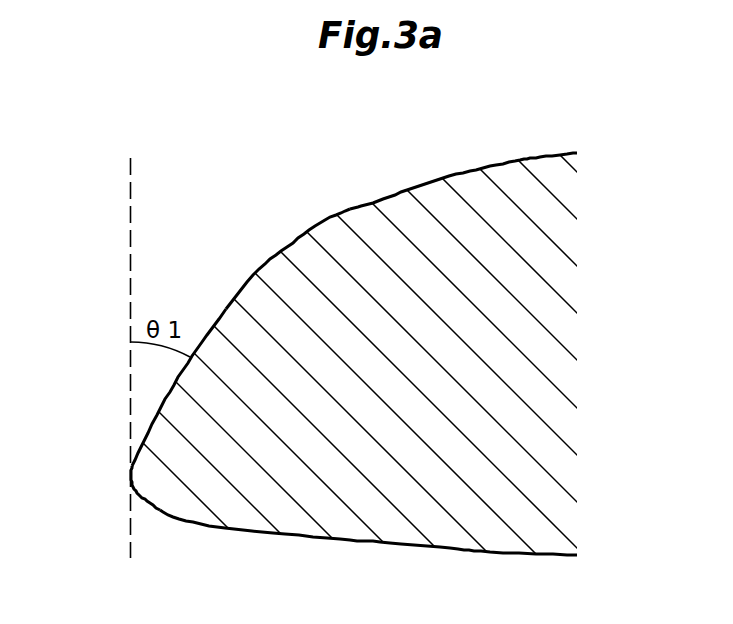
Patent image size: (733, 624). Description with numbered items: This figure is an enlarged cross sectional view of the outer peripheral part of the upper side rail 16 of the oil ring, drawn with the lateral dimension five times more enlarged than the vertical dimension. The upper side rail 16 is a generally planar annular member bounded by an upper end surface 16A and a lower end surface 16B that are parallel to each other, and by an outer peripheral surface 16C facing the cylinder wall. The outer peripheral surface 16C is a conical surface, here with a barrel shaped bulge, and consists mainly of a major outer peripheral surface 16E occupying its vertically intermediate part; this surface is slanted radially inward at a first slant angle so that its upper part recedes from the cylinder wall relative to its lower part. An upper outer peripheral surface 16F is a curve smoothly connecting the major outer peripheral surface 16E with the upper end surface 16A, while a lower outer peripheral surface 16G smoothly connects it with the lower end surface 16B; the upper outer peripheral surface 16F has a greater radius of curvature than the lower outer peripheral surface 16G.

The upper side rail 16 is at (592, 150).
The upper end surface 16A is at (538, 154).
The lower end surface 16B is at (511, 556).
The outer peripheral surface 16C is at (220, 205).
The major outer peripheral surface 16E is at (225, 305).
The upper outer peripheral surface 16F is at (315, 225).
The lower outer peripheral surface 16G is at (131, 466).